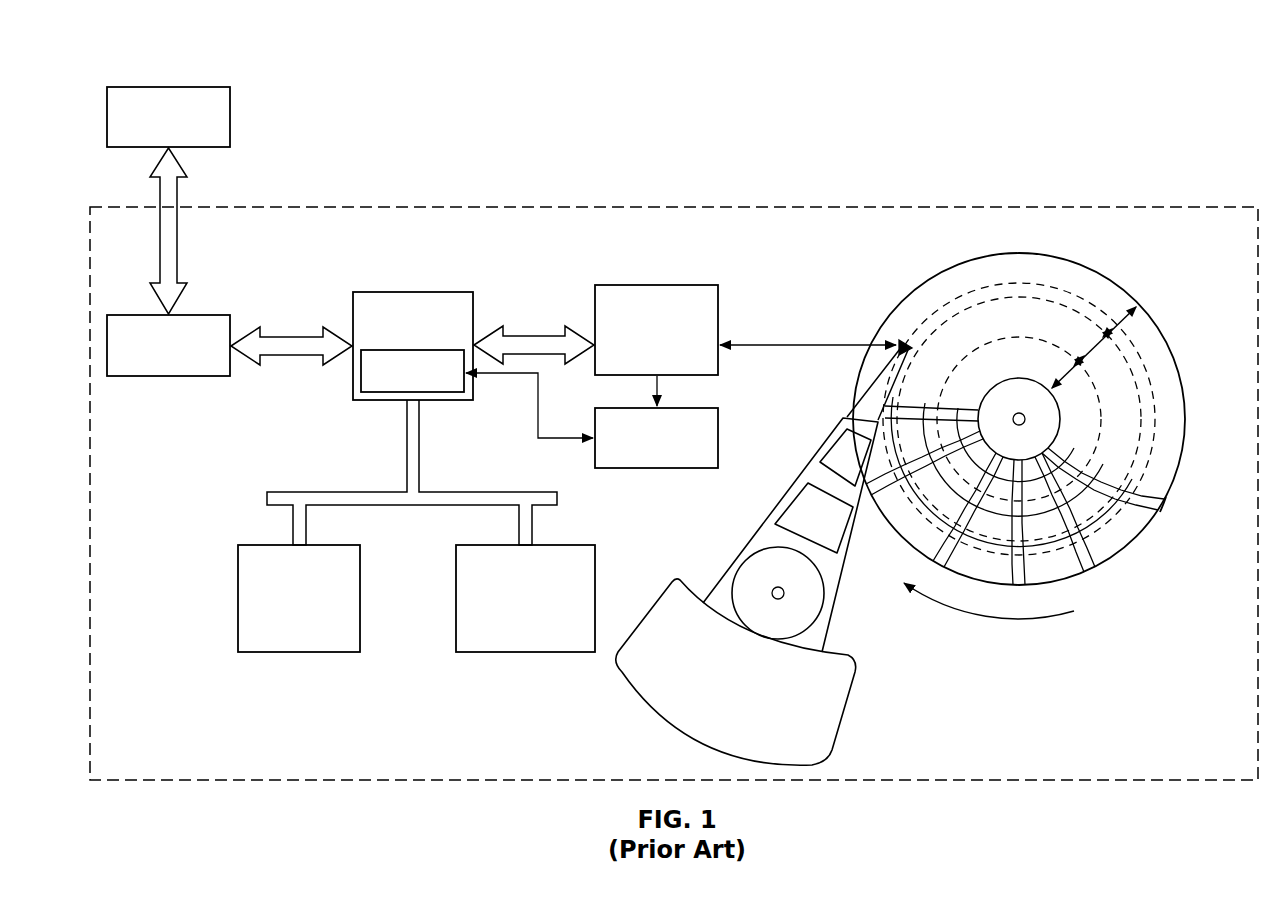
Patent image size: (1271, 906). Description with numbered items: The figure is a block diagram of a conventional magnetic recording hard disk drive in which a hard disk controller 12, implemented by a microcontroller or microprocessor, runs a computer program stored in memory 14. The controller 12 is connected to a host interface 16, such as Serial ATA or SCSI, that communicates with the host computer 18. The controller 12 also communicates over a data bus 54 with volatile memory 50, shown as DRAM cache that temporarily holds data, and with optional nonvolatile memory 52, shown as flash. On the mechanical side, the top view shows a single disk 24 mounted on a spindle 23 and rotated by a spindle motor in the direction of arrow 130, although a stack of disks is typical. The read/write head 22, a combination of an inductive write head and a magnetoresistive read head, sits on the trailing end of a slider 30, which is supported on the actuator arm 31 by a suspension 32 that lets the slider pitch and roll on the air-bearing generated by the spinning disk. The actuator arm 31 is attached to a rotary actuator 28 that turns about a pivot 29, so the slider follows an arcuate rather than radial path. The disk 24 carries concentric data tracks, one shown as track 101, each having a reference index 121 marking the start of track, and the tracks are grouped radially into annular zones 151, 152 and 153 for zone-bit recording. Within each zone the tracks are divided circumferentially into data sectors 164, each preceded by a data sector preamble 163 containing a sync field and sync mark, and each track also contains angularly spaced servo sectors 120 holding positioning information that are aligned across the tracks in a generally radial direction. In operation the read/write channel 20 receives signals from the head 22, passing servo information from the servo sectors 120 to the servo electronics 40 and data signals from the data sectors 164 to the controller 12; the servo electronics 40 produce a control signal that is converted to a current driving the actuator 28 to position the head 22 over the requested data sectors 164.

The host computer 18 is at (150, 87).
The host interface 16 is at (150, 315).
The hard disk controller 12 is at (396, 292).
The memory 14 is at (406, 350).
The read/write channel 20 is at (645, 285).
The servo electronics 40 is at (644, 408).
The data bus 54 is at (316, 492).
The volatile memory 50 is at (285, 545).
The nonvolatile memory 52 is at (503, 545).
The rotary actuator 28 is at (662, 606).
The pivot 29 is at (786, 598).
The actuator arm 31 is at (826, 445).
The suspension 32 is at (862, 392).
The slider 30 is at (903, 342).
The read/write head 22 is at (906, 336).
The disk 24 is at (982, 257).
The spindle 23 is at (1016, 414).
The zone 153 is at (1068, 355).
The track 101 is at (1077, 293).
The zone 151 is at (1128, 318).
The zone 152 is at (1095, 347).
The reference index 121 is at (1168, 500).
The data sectors 164 is at (925, 543).
The data sector preamble 163 is at (900, 513).
The servo sectors 120 is at (937, 560).
The arrow 130 is at (1023, 624).